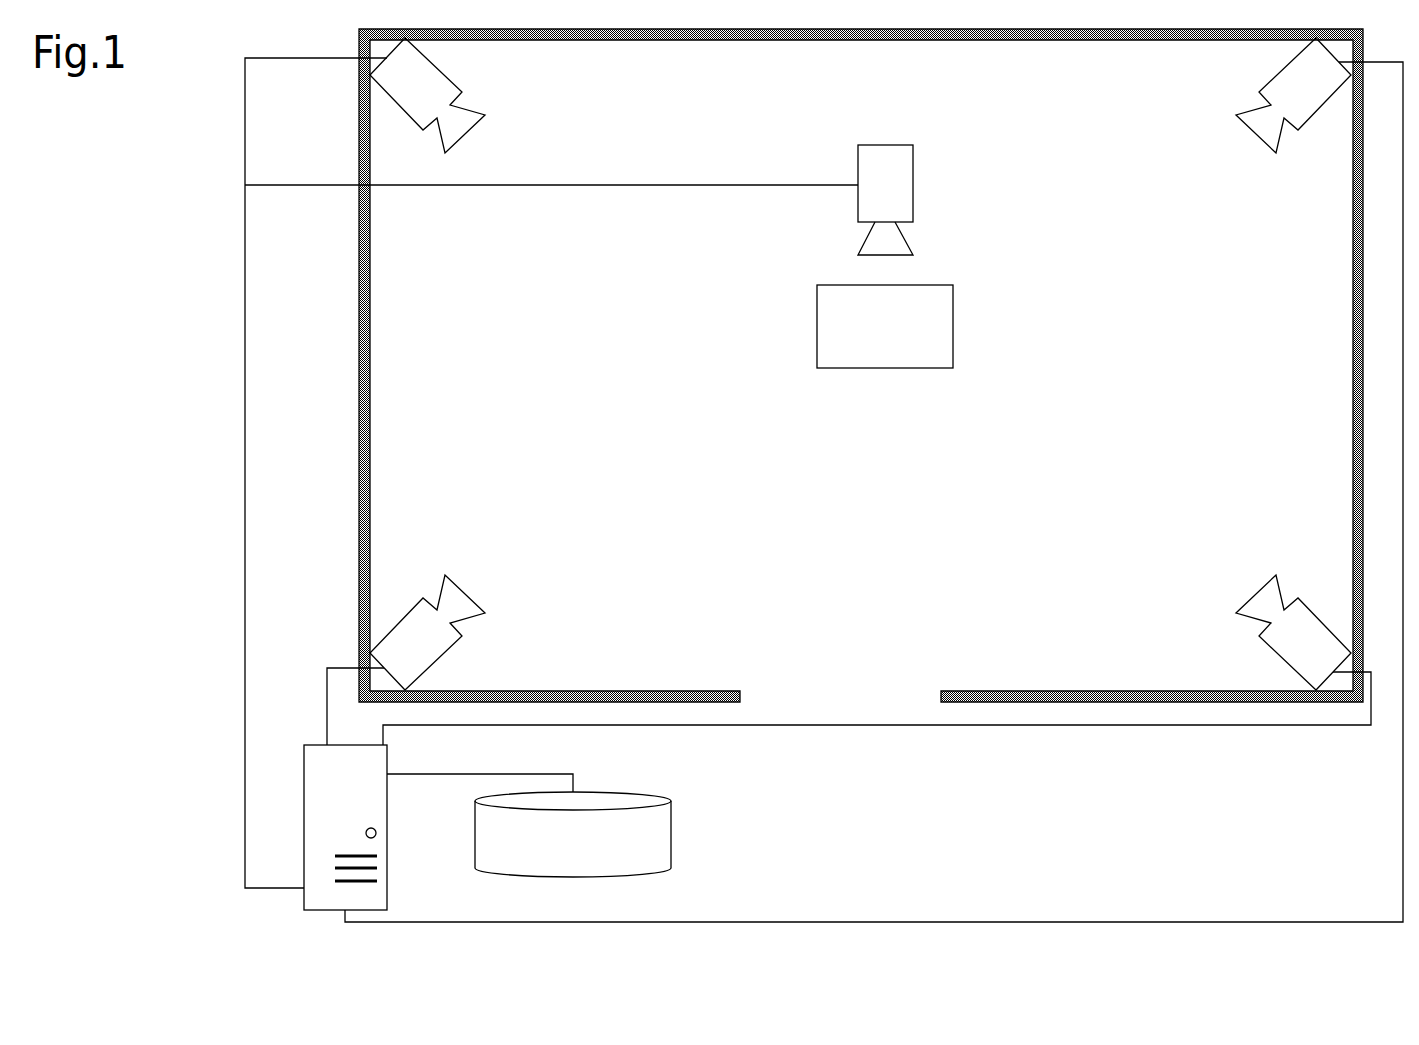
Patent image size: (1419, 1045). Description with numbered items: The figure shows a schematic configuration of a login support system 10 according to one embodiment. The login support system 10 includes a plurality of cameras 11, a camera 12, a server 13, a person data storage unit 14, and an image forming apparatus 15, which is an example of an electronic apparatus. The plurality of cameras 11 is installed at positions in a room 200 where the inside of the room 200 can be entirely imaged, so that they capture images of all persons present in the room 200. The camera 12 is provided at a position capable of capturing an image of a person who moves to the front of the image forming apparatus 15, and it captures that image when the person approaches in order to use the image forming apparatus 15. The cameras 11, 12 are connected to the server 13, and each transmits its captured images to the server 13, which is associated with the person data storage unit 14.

The login support system 10 is at (216, 140).
The cameras 11 is at (443, 70).
The camera 12 is at (913, 188).
The server 13 is at (387, 826).
The person data storage unit 14 is at (671, 828).
The image forming apparatus 15 is at (953, 322).
The room 200 is at (359, 263).